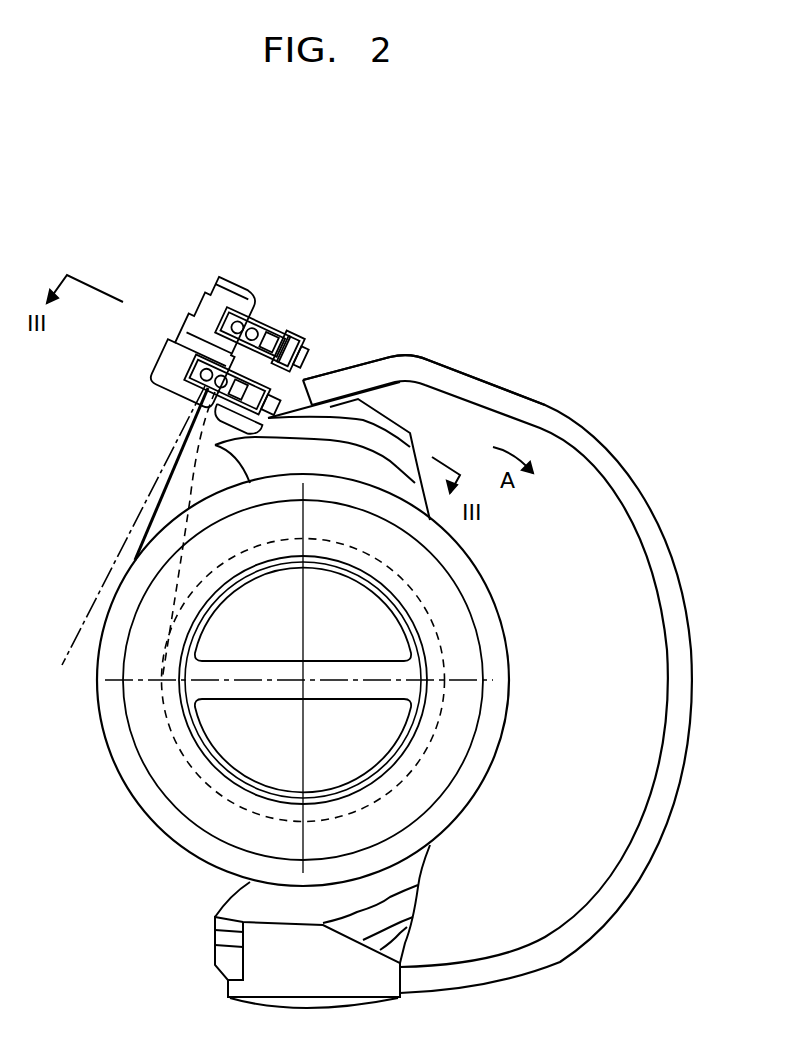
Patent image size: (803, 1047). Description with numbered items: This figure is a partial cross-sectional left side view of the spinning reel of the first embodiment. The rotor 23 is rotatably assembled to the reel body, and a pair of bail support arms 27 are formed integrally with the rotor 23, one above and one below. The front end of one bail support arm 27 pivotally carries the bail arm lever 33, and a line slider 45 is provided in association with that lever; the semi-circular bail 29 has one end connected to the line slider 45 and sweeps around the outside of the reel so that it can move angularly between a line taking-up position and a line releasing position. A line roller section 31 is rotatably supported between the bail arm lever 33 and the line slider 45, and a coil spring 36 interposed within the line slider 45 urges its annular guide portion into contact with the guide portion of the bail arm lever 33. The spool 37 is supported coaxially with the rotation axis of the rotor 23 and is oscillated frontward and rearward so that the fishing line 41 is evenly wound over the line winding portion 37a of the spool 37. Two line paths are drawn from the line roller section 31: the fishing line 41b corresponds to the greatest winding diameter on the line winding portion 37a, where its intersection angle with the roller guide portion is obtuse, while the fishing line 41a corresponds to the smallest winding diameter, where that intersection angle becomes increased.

The rotor 23 is at (205, 937).
The bail support arm 27 is at (396, 425).
The bail 29 is at (673, 590).
The line roller section 31 is at (222, 312).
The bail arm lever 33 is at (207, 282).
The coil spring 36 is at (292, 338).
The spool 37 is at (500, 647).
The line winding portion 37a is at (447, 712).
The fishing line 41 is at (114, 525).
The fishing line 41a is at (177, 493).
The fishing line 41b is at (172, 457).
The line slider 45 is at (363, 356).